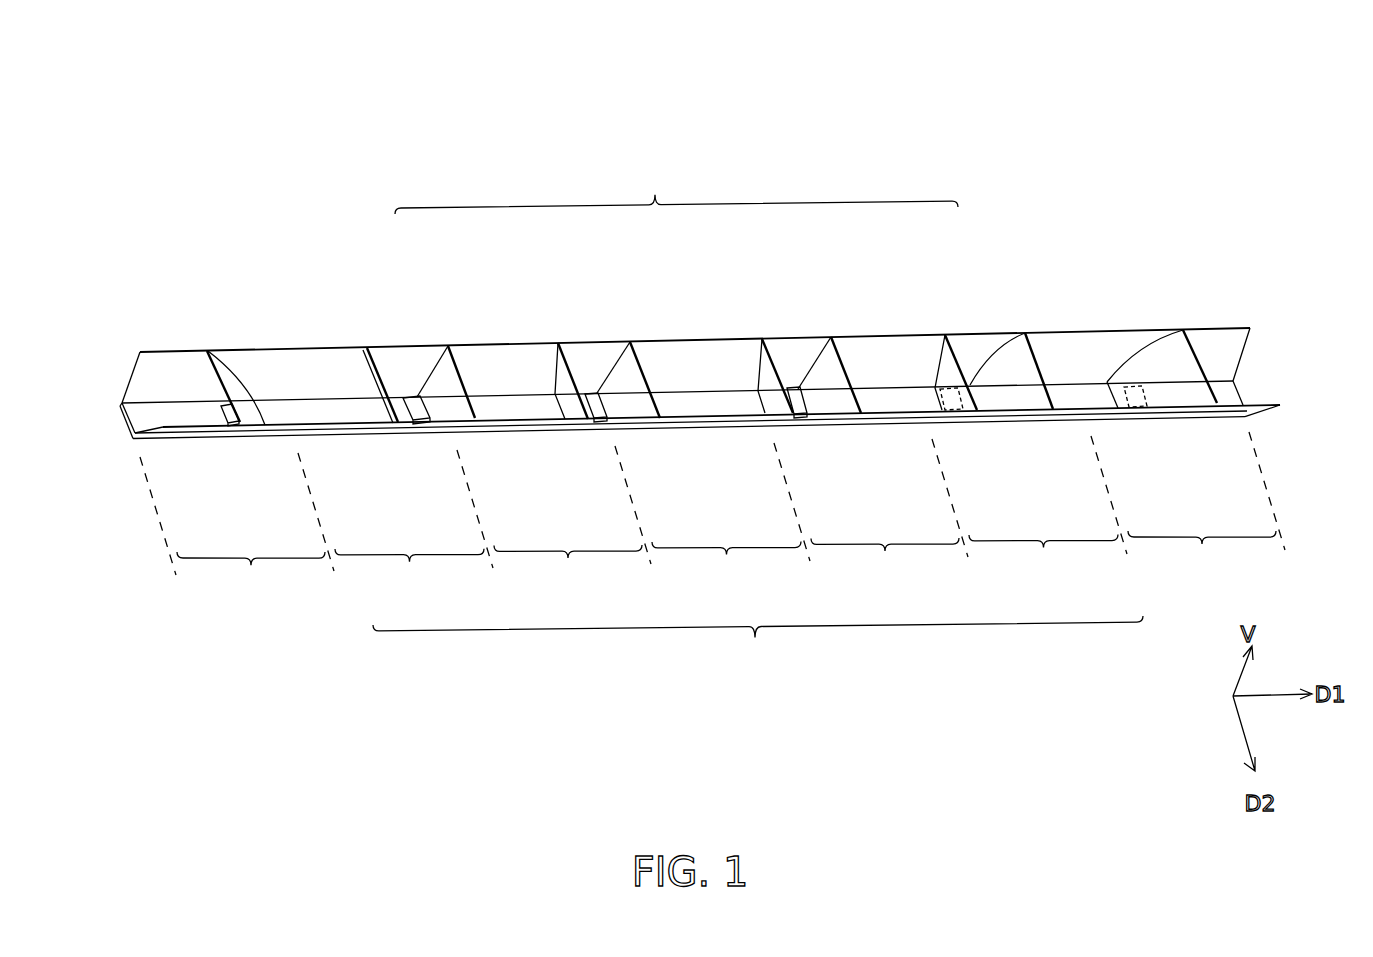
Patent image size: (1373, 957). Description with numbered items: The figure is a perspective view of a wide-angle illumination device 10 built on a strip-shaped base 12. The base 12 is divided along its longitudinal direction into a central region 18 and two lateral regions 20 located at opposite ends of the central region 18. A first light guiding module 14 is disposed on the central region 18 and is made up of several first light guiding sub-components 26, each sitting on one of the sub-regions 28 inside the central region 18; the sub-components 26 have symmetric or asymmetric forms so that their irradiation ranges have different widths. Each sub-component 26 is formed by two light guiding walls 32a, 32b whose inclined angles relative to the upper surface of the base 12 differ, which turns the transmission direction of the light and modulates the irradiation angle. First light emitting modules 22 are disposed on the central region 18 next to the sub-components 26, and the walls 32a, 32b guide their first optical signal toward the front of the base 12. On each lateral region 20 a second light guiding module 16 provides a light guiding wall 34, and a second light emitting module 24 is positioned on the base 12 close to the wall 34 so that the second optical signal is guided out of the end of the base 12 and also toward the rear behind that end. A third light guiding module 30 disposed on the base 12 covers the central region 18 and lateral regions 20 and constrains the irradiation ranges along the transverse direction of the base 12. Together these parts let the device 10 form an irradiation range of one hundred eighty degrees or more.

The wide-angle illumination device 10 is at (1213, 98).
The base 12 is at (135, 437).
The first light guiding module 14 is at (676, 190).
The second light guiding module 16 is at (1162, 360).
The central region 18 is at (758, 641).
The lateral region 20 is at (726, 564).
The first light emitting module 22 is at (416, 423).
The second light emitting module 24 is at (225, 427).
The first light guiding sub-component 26 is at (699, 312).
The sub-region 28 is at (726, 565).
The third light guiding module 30 is at (148, 378).
The light guiding wall 32a is at (446, 337).
The light guiding wall 32b is at (380, 364).
The light guiding wall 34 is at (230, 380).